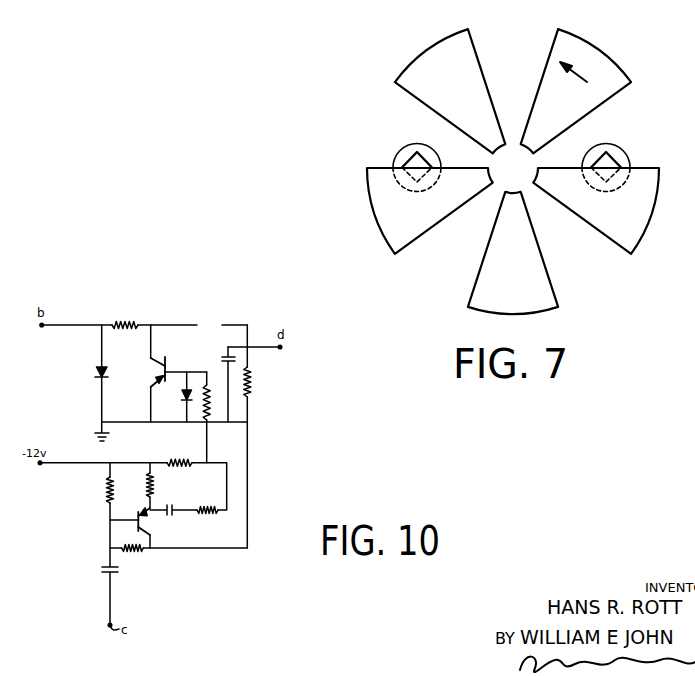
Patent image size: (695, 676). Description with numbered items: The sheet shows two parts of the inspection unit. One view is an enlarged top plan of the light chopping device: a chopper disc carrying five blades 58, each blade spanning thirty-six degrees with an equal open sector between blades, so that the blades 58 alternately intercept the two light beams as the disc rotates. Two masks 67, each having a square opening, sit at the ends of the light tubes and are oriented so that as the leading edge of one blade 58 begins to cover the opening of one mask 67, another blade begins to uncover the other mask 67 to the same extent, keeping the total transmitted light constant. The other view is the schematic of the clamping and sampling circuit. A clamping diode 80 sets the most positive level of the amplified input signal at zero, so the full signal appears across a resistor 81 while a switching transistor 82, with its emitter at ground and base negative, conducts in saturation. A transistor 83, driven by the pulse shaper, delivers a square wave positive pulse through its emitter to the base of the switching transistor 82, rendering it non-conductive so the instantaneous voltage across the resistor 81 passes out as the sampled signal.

In FIG. 7, the blades 58 is at (482, 263).
In FIG. 7, the mask 67 is at (418, 143).
In FIG. 10, the clamping diode 80 is at (105, 371).
In FIG. 10, the resistor 81 is at (126, 322).
In FIG. 10, the switching transistor 82 is at (163, 360).
In FIG. 10, the transistor 83 is at (137, 516).